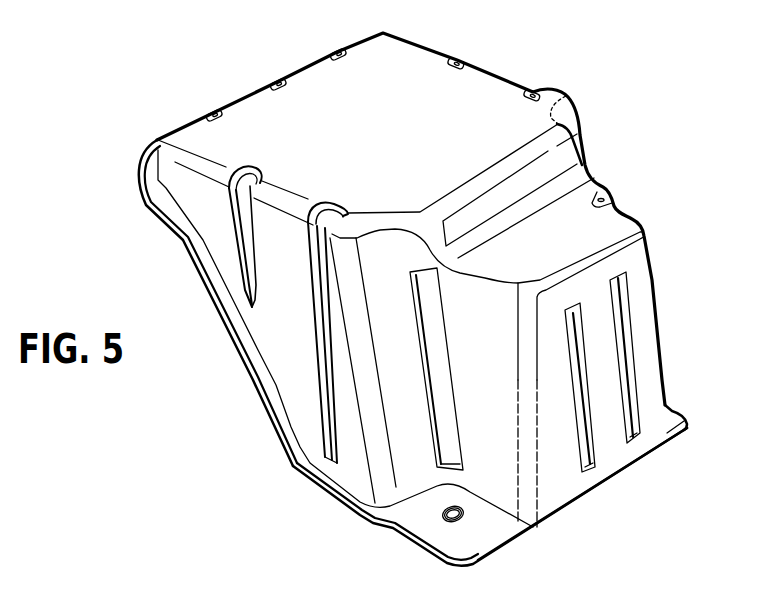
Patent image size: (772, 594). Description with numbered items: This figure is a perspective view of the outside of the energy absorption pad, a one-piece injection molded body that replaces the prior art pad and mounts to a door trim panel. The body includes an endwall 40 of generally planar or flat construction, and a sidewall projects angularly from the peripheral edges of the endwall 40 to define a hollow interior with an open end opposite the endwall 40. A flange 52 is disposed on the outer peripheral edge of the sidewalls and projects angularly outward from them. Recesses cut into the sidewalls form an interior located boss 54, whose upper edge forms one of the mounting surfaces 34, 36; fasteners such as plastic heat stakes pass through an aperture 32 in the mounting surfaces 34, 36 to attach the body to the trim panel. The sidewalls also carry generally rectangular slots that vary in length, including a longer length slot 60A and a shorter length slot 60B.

The endwall 40 is at (461, 103).
The flange 52 is at (253, 358).
The mounting surface 34 is at (470, 543).
The mounting surface 36 is at (673, 417).
The aperture 32 is at (443, 516).
The boss 54 is at (493, 418).
The longer length slot 60A is at (333, 402).
The shorter length slot 60B is at (249, 257).